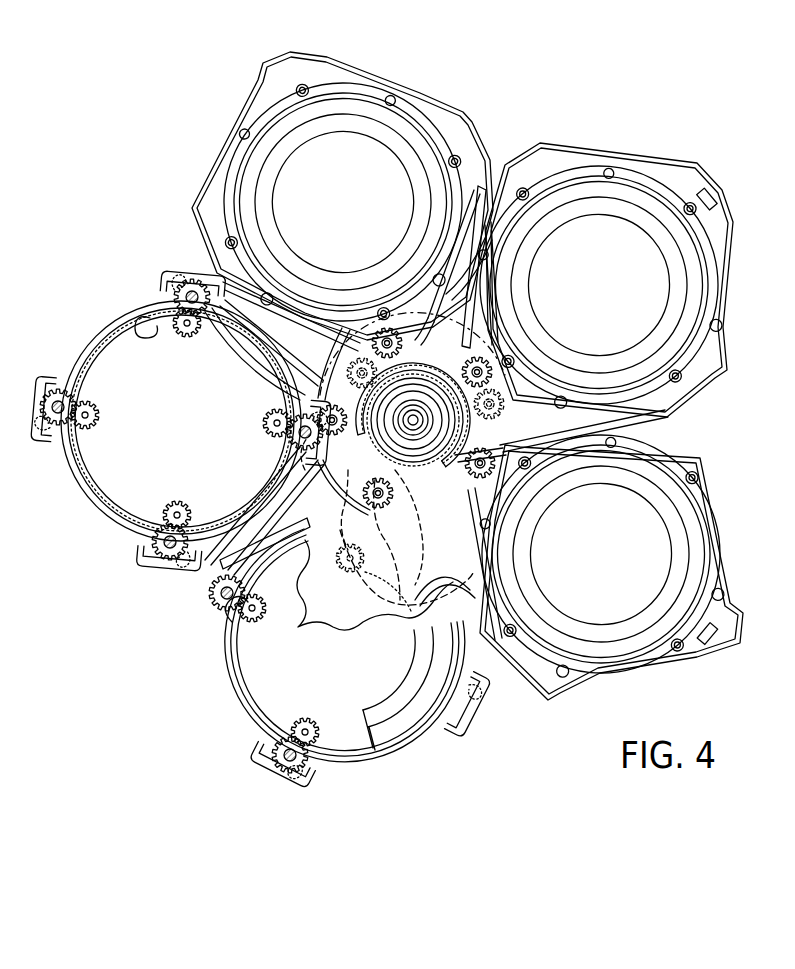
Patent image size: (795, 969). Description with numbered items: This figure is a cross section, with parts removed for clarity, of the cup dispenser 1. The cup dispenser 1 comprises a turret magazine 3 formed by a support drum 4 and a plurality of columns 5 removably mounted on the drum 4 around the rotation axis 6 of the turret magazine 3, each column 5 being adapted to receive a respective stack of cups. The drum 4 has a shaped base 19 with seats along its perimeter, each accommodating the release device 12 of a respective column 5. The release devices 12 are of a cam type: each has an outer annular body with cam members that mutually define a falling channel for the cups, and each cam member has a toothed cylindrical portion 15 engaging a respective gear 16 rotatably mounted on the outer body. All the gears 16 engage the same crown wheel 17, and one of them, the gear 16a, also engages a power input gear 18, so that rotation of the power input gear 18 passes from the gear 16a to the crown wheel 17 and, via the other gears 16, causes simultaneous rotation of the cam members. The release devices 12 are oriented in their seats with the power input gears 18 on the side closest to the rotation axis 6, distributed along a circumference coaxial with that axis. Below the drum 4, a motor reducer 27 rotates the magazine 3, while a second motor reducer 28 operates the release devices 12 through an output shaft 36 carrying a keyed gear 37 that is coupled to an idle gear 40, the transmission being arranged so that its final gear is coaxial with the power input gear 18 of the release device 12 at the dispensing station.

The cup dispenser 1 is at (0, 193).
The turret magazine 3 is at (563, 110).
The support drum 4 is at (518, 378).
The column 5 is at (385, 68).
The rotation axis 6 is at (458, 430).
The release device 12 is at (252, 135).
The toothed cylindrical portion 15 is at (186, 338).
The gear 16 is at (193, 290).
The gear 16a is at (300, 445).
The crown wheel 17 is at (160, 325).
The power input gear 18 is at (385, 328).
The shaped base 19 is at (466, 258).
The motor reducer 27 is at (484, 327).
The motor reducer 28 is at (368, 597).
The output shaft 36 is at (378, 507).
The keyed gear 37 is at (390, 505).
The gear 40 is at (340, 472).